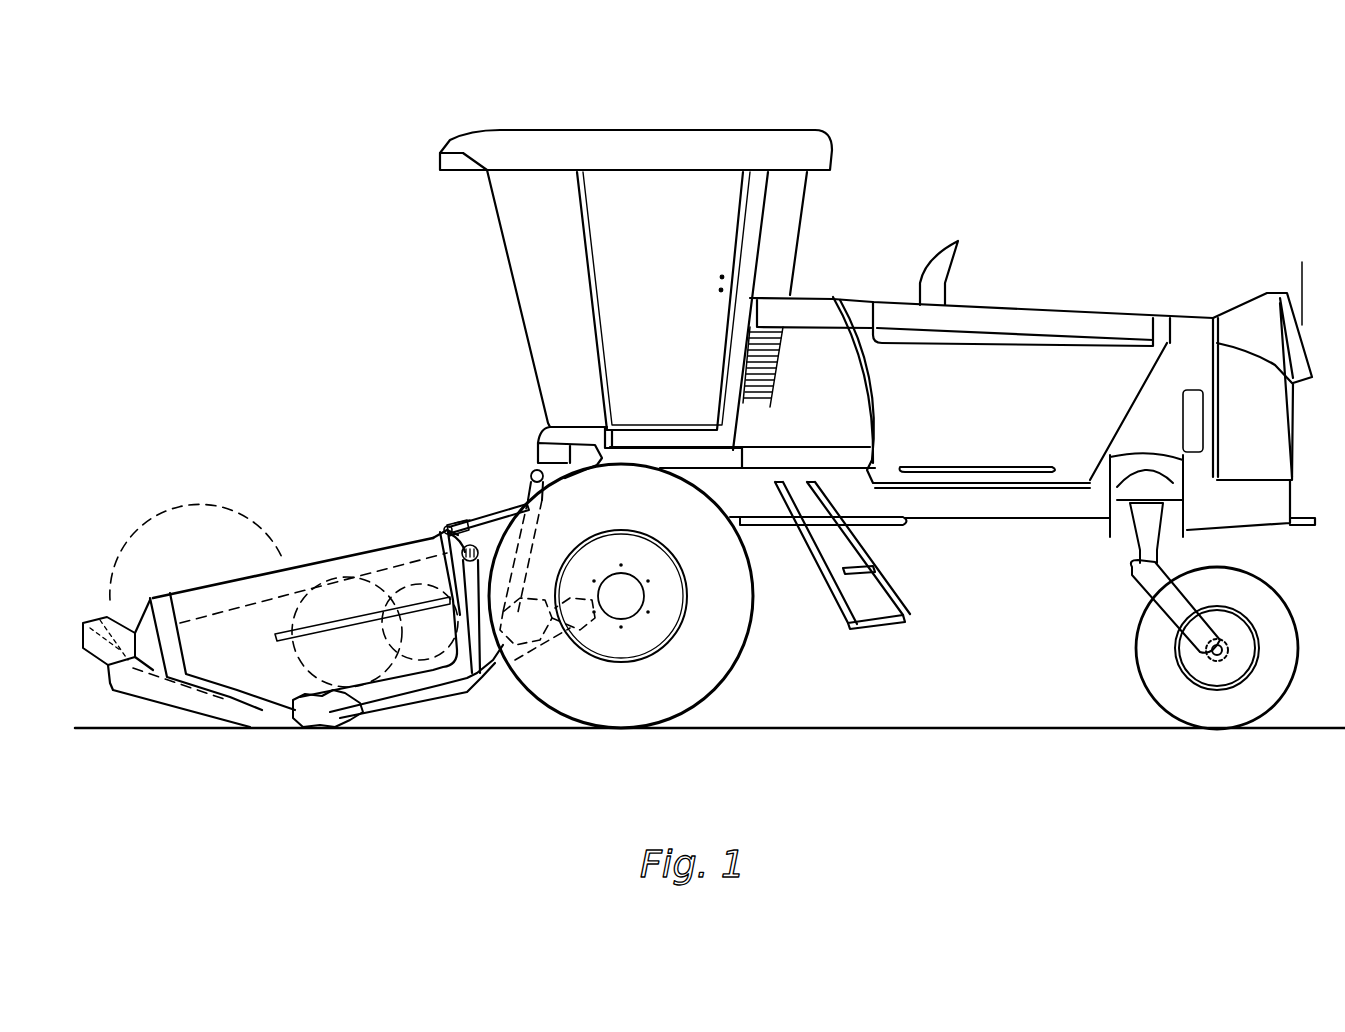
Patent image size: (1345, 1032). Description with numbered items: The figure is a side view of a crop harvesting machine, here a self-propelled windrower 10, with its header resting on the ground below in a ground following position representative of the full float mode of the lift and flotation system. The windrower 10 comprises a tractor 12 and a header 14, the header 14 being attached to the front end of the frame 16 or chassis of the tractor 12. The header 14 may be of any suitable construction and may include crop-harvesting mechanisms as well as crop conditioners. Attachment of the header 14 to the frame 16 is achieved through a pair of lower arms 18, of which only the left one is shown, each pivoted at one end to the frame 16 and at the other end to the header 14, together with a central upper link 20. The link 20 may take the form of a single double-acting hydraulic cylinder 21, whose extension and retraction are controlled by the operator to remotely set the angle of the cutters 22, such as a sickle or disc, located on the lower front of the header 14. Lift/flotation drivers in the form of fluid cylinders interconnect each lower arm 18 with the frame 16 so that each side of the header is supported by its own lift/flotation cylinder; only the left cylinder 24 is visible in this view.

The self-propelled windrower 10 is at (1118, 122).
The tractor 12 is at (1117, 313).
The header 14 is at (337, 557).
The frame 16 is at (760, 527).
The lower arm 18 is at (453, 706).
The central upper link 20 is at (493, 512).
The double-acting hydraulic cylinder 21 is at (462, 521).
The cutters 22 is at (300, 724).
The fluid cylinder 24 is at (533, 528).